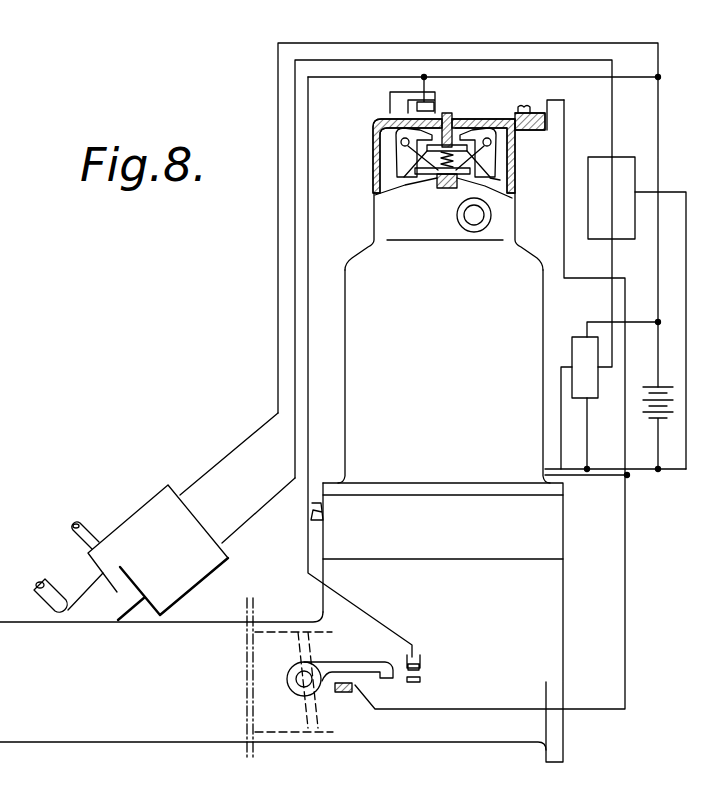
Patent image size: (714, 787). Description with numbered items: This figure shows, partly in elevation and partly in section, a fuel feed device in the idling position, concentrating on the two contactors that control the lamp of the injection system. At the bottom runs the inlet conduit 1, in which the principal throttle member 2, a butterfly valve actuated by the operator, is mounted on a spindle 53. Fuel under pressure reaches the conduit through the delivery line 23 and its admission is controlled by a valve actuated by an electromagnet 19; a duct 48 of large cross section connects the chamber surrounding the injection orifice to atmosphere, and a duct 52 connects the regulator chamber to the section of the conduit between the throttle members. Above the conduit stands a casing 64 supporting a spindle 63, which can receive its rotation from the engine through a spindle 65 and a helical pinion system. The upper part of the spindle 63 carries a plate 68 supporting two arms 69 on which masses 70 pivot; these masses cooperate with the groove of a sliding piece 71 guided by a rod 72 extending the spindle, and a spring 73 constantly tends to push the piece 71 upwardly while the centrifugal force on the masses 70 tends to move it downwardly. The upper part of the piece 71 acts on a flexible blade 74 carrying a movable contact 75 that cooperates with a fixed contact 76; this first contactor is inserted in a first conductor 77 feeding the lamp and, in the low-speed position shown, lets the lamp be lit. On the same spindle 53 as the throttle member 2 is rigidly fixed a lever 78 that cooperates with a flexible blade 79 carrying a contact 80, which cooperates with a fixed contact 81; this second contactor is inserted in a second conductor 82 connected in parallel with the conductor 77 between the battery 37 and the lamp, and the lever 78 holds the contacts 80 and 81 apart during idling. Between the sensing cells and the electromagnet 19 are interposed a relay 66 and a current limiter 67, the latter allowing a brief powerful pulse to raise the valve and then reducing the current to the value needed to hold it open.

The inlet conduit 1 is at (205, 720).
The principal throttle member 2 is at (303, 652).
The electromagnet 19 is at (162, 507).
The delivery line 23 is at (89, 535).
The battery 37 is at (657, 414).
The duct 48 is at (42, 590).
The duct 52 is at (313, 514).
The spindle 53 is at (300, 683).
The spindle 63 is at (447, 184).
The casing 64 is at (458, 371).
The spindle 65 is at (474, 215).
The relay 66 is at (580, 348).
The current limiter 67 is at (606, 175).
The plate 68 is at (427, 174).
The arms 69 is at (401, 142).
The masses 70 is at (400, 173).
The sliding piece 71 is at (452, 122).
The rod 72 is at (387, 123).
The spring 73 is at (495, 177).
The flexible blade 74 is at (441, 117).
The movable contact 75 is at (407, 108).
The fixed contact 76 is at (420, 100).
The first conductor 77 is at (426, 76).
The lever 78 is at (345, 668).
The flexible blade 79 is at (372, 682).
The contact 80 is at (418, 681).
The fixed contact 81 is at (418, 668).
The second conductor 82 is at (338, 368).